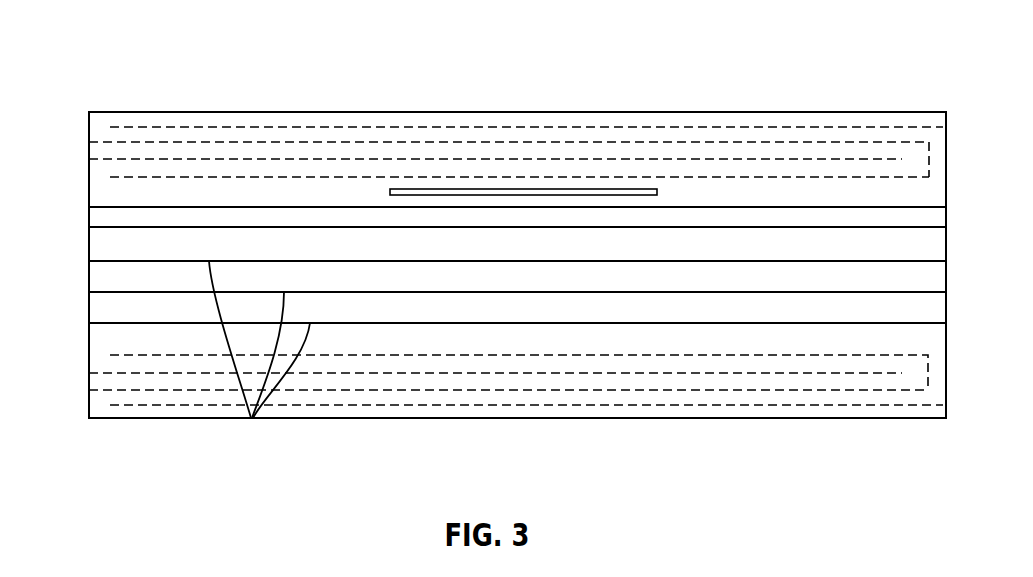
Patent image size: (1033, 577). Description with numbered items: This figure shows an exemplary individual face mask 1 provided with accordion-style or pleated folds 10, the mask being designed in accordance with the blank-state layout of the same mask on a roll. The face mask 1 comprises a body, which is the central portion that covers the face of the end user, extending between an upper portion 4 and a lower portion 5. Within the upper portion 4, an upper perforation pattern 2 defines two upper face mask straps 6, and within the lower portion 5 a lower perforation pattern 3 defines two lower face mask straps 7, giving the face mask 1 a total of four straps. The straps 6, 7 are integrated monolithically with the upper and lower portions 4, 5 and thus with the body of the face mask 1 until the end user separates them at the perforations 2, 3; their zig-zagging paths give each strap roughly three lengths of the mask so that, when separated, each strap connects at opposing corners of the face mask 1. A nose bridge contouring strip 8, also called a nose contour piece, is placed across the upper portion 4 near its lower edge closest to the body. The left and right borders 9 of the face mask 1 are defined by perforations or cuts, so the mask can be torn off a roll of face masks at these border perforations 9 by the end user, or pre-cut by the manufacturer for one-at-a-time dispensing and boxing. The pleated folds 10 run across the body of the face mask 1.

The face mask 1 is at (140, 281).
The upper perforation pattern 2 is at (135, 127).
The lower perforation pattern 3 is at (133, 405).
The upper portion 4 is at (112, 193).
The lower portion 5 is at (113, 338).
The upper face mask strap 6 is at (115, 152).
The lower face mask strap 7 is at (140, 385).
The nose bridge contouring strip 8 is at (408, 189).
The left and right borders 9 is at (89, 240).
The accordion-style folds 10 is at (251, 418).